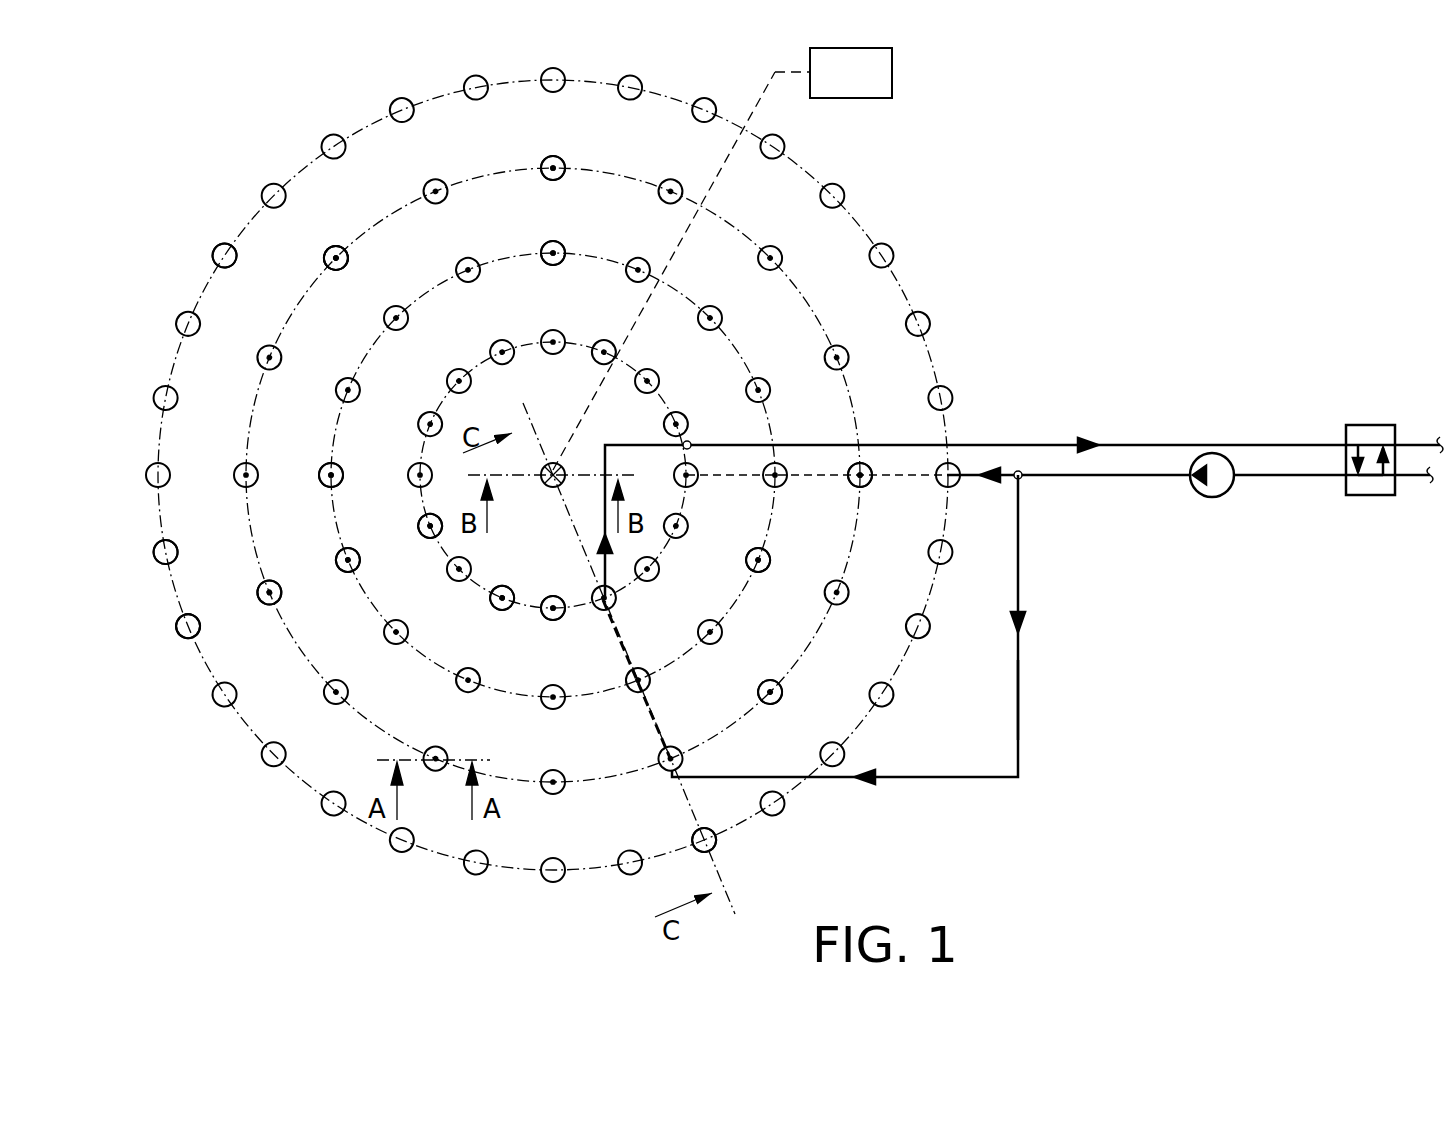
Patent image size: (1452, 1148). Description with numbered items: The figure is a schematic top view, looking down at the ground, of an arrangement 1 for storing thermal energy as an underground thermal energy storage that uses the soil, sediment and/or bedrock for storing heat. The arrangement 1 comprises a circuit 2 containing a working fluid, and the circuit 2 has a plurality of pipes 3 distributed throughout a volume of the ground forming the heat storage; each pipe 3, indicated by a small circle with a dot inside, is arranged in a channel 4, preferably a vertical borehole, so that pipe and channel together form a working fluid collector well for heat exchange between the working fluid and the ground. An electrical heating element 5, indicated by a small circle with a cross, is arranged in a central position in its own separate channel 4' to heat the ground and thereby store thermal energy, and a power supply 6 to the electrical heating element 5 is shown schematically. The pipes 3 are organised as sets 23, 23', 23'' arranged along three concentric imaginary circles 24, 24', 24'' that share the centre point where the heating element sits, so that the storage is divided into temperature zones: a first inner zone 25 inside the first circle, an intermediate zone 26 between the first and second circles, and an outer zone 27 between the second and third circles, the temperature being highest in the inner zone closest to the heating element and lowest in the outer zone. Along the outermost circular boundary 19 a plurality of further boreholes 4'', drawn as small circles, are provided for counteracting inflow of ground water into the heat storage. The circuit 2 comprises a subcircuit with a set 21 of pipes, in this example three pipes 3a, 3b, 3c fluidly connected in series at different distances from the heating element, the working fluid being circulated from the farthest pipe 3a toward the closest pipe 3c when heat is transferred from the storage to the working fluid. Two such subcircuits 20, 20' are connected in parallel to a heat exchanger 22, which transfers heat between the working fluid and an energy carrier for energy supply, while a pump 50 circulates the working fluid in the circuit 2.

The arrangement 1 is at (1058, 172).
The circuit 2 is at (1040, 700).
The pipe 3 is at (330, 260).
The pipe 3a is at (672, 745).
The pipe 3b is at (637, 665).
The pipe 3c is at (600, 612).
The channel 4 is at (628, 241).
The channel 4' is at (536, 506).
The further channel 4'' is at (491, 588).
The electrical heating element 5 is at (553, 462).
The power supply 6 is at (892, 73).
The outermost circular boundary 19 is at (521, 878).
The subcircuit 20 is at (1027, 626).
The subcircuit 20' is at (1020, 483).
The set of pipes 21 is at (625, 702).
The heat exchanger 22 is at (1372, 495).
The set of pipes 23 is at (375, 694).
The set of pipes 23' is at (649, 150).
The set of pipes 23'' is at (618, 108).
The imaginary circle 24 is at (360, 626).
The imaginary circle 24' is at (569, 306).
The imaginary circle 24'' is at (656, 261).
The central zone 25 is at (440, 452).
The intermediate zone 26 is at (407, 382).
The outer zone 27 is at (413, 250).
The pump 50 is at (1210, 497).